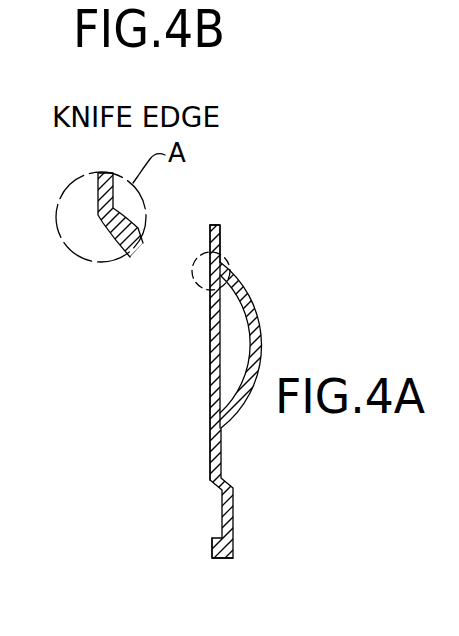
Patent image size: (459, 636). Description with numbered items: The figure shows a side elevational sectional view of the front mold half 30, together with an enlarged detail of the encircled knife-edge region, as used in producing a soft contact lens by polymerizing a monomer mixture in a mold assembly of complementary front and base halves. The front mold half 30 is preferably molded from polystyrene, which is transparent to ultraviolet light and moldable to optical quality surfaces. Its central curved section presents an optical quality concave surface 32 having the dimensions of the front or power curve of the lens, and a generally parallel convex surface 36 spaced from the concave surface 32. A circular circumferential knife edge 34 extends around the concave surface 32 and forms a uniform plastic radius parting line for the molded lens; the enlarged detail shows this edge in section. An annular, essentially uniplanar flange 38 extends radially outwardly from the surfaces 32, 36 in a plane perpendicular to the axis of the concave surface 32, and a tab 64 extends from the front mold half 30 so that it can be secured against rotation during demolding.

In FIG. 4A, the front mold half 30 is at (210, 365).
In FIG. 4A, the concave surface 32 is at (210, 311).
In FIG. 4B, the knife edge 34 is at (97, 224).
In FIG. 4A, the convex surface 36 is at (256, 318).
In FIG. 4A, the flange 38 is at (221, 232).
In FIG. 4A, the tab 64 is at (219, 558).